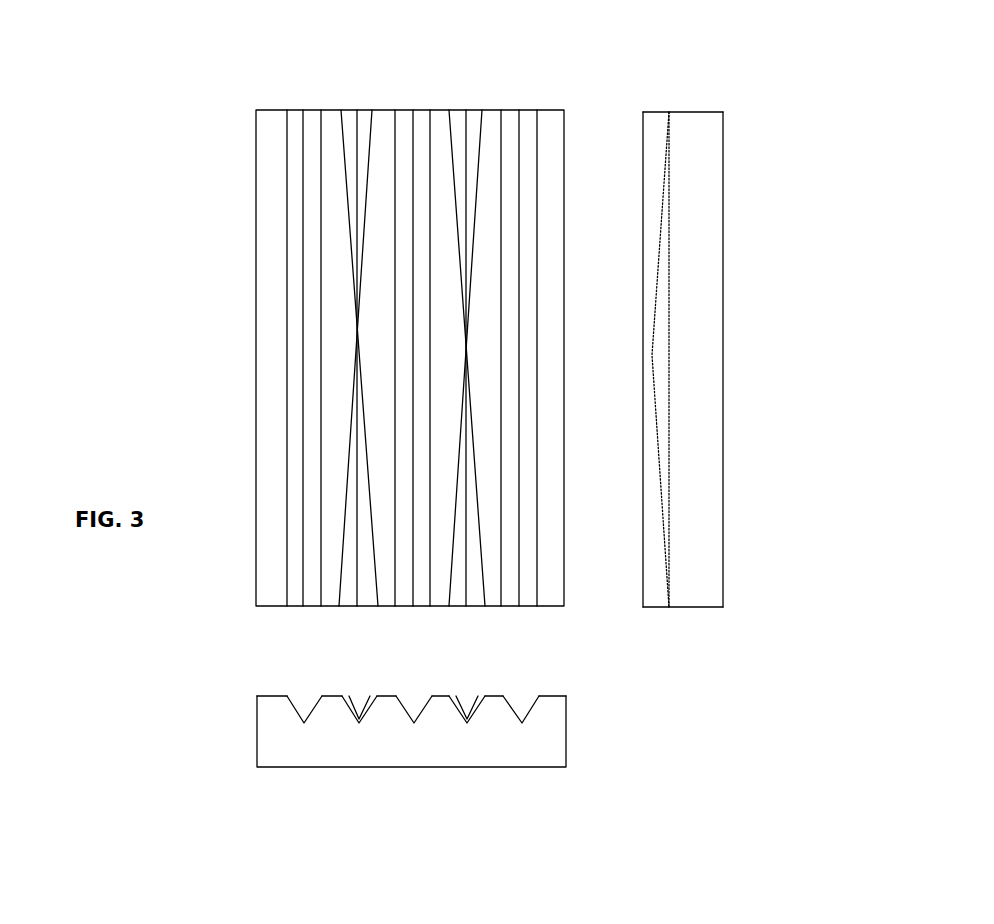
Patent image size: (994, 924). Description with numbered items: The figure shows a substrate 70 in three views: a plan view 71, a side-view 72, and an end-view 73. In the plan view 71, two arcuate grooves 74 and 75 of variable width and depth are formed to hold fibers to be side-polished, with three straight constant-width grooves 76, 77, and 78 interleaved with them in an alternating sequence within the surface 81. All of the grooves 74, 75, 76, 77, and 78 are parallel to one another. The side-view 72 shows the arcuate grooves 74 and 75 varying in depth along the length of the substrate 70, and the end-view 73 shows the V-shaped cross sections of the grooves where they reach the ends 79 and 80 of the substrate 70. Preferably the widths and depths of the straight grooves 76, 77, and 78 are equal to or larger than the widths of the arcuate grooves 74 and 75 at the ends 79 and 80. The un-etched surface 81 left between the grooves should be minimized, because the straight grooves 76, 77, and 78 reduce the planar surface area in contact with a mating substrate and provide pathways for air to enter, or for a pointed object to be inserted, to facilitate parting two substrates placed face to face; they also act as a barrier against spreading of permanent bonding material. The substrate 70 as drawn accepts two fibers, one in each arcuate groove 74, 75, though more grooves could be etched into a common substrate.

The substrate 70 is at (146, 308).
The plan view 71 is at (573, 86).
The side-view 72 is at (747, 96).
The end-view 73 is at (393, 808).
The arcuate groove 74 is at (348, 125).
The arcuate groove 75 is at (456, 125).
The straight groove 76 is at (295, 125).
The straight groove 77 is at (404, 125).
The straight groove 78 is at (503, 125).
The end of the substrate 79 is at (686, 111).
The end of the substrate 80 is at (700, 608).
The surface 81 is at (276, 699).